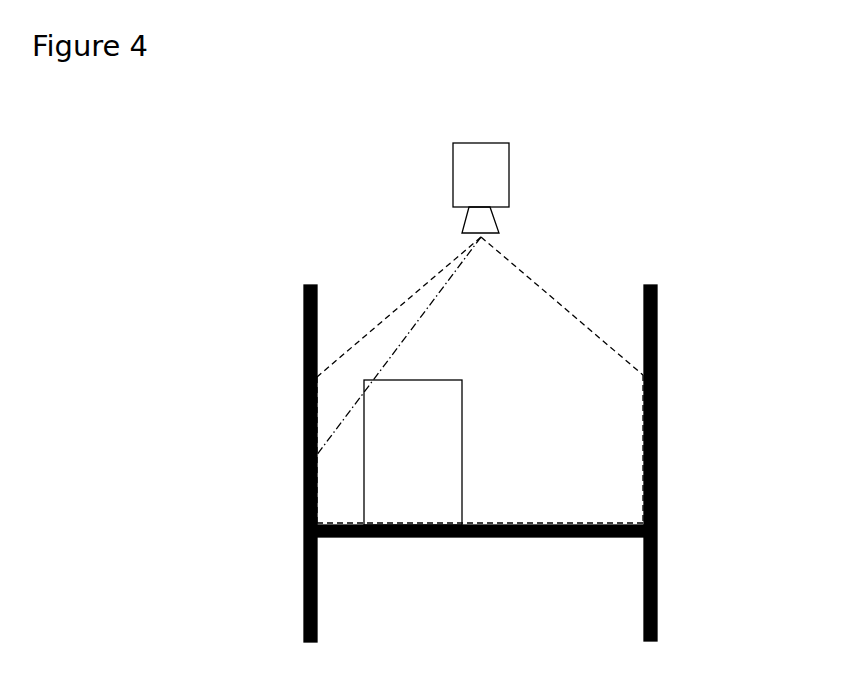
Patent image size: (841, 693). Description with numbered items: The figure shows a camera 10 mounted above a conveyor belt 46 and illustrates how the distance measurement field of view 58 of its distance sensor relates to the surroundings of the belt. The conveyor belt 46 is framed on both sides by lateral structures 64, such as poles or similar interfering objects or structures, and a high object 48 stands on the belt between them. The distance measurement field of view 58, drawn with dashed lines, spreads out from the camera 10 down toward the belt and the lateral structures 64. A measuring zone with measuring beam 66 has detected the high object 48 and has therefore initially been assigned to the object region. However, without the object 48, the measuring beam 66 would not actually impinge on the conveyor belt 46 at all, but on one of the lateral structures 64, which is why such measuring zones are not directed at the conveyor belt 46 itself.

The camera 10 is at (484, 158).
The conveyor belt 46 is at (490, 538).
The object 48 is at (442, 470).
The distance measurement field of view 58 is at (386, 322).
The lateral structures 64 is at (303, 315).
The measuring beam 66 is at (417, 328).